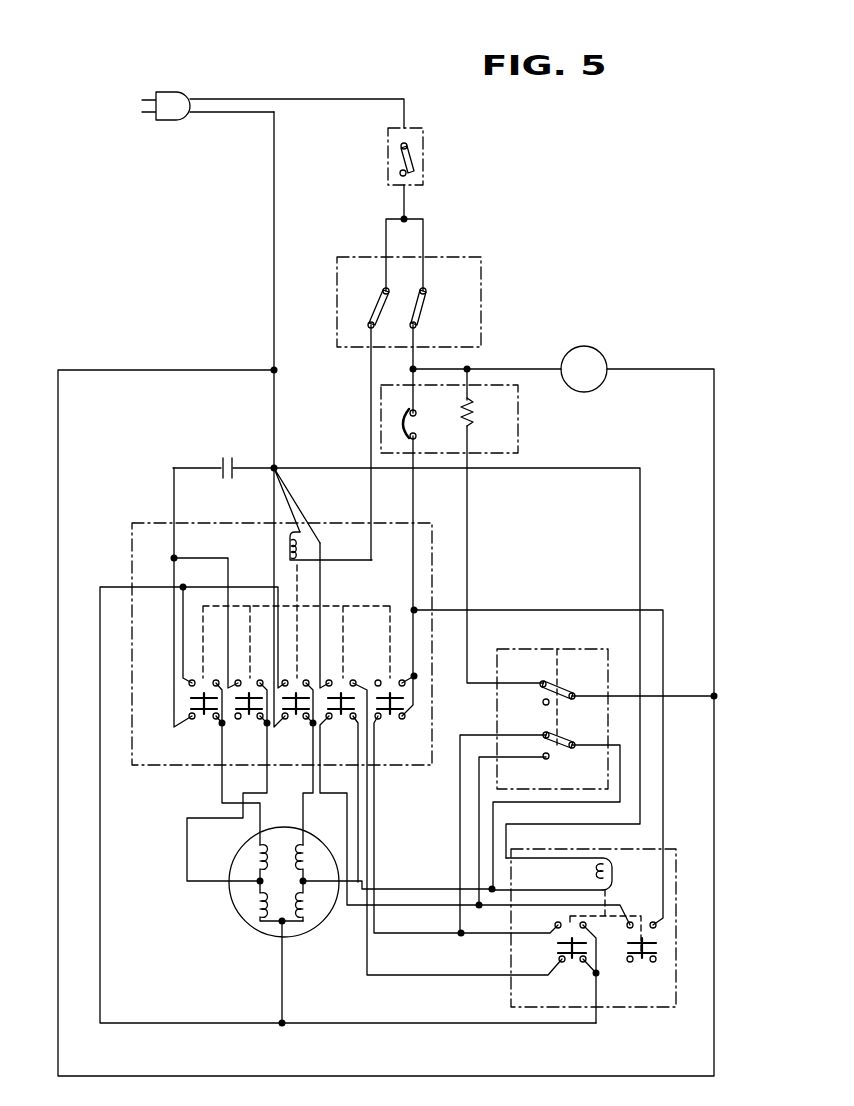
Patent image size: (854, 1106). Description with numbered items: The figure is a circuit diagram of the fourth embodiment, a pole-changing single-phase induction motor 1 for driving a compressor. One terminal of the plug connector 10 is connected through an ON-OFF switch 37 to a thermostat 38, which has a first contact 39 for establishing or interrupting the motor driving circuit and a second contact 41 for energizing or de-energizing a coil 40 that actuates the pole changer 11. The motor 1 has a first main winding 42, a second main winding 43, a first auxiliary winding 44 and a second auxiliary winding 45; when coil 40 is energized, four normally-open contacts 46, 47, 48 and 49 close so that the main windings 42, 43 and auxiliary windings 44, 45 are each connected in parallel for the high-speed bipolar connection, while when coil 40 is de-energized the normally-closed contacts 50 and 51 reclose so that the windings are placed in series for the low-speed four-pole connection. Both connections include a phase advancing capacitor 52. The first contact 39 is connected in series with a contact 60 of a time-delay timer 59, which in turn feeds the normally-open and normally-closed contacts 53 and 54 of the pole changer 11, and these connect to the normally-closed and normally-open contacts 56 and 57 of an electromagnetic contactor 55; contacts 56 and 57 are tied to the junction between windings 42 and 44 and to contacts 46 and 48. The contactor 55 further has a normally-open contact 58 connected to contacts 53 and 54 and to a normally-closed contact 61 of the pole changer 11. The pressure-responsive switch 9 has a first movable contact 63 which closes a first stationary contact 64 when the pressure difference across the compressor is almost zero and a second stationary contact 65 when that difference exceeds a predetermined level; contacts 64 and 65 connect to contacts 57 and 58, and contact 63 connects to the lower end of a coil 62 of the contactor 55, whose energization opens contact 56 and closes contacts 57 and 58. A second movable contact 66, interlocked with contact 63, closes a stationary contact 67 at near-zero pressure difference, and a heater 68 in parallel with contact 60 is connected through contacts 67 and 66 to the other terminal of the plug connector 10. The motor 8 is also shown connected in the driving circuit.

The induction motor 1 is at (254, 928).
The motor 8 is at (584, 346).
The pressure-responsive switch 9 is at (497, 719).
The plug connector 10 is at (175, 92).
The pole changer 11 is at (130, 549).
The ON-OFF switch 37 is at (425, 140).
The thermostat 38 is at (483, 260).
The first contact 39 is at (427, 317).
The coil 40 is at (306, 547).
The second contact 41 is at (380, 306).
The first main winding 42 is at (314, 906).
The second main winding 43 is at (312, 857).
The first auxiliary winding 44 is at (254, 903).
The second auxiliary winding 45 is at (254, 860).
The normally-open contact 46 is at (204, 678).
The normally-open contact 47 is at (249, 678).
The normally-open contact 48 is at (296, 678).
The normally-open contact 49 is at (342, 678).
The normally-closed contact 50 is at (199, 722).
The normally-closed contact 51 is at (291, 722).
The phase advancing capacitor 52 is at (228, 457).
The normally-open contact 53 is at (394, 678).
The normally-closed contact 54 is at (396, 722).
The electromagnetic contactor 55 is at (612, 1010).
The normally-closed contact 56 is at (571, 964).
The normally-open contact 57 is at (558, 945).
The normally-open contact 58 is at (658, 934).
The time-delay timer 59 is at (519, 391).
The contact 60 is at (418, 424).
The normally-closed contact 61 is at (340, 722).
The coil 62 is at (597, 870).
The first movable contact 63 is at (573, 742).
The first stationary contact 64 is at (545, 732).
The second stationary contact 65 is at (551, 758).
The second movable contact 66 is at (574, 692).
The stationary contact 67 is at (541, 682).
The heater 68 is at (472, 415).